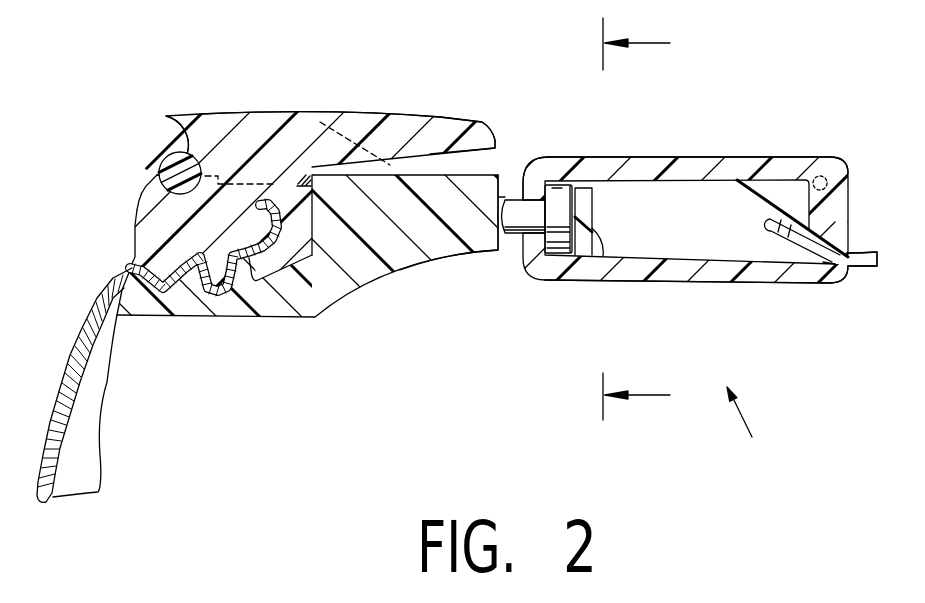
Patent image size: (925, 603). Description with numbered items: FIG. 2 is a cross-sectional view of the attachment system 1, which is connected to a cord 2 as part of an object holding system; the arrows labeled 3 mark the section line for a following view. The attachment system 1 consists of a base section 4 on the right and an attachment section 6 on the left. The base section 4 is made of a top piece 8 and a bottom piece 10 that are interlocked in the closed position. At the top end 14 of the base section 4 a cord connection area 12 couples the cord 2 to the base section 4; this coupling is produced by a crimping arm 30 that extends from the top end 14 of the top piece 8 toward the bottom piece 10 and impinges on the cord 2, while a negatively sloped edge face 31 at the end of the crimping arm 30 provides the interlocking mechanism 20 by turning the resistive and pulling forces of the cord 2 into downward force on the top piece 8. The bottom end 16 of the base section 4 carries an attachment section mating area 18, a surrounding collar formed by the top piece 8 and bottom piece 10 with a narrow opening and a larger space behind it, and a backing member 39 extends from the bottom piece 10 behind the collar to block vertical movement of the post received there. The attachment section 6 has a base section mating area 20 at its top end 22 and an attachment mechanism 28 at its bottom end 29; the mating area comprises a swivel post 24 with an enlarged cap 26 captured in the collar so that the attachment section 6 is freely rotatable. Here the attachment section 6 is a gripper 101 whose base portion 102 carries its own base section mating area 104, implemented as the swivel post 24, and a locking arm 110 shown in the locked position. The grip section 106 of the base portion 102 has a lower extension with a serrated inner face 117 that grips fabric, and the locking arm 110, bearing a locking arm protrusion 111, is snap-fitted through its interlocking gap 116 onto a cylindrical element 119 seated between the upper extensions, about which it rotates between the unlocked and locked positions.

The attachment system 1 is at (747, 427).
The cord 2 is at (867, 270).
The section line 3 is at (650, 219).
The base section 4 is at (783, 156).
The attachment section 6 is at (282, 112).
The top piece 8 is at (565, 157).
The bottom piece 10 is at (730, 282).
The cord connection area 12 is at (826, 284).
The top end 14 is at (846, 156).
The bottom end 16 is at (527, 186).
The attachment section mating area 18 is at (572, 256).
The interlocking mechanism 20 is at (506, 195).
The top end 22 is at (453, 118).
The swivel post 24 is at (505, 240).
The enlarged cap 26 is at (550, 254).
The attachment mechanism 28 is at (170, 115).
The bottom end 29 is at (137, 133).
The crimping arm 30 is at (848, 172).
The negatively sloped edge face 31 is at (800, 233).
The backing member 39 is at (601, 258).
The gripper 101 is at (290, 318).
The base portion 102 is at (338, 300).
The base section mating area 104 is at (435, 262).
The grip section 106 is at (168, 320).
The locking arm 110 is at (368, 113).
The locking arm protrusion 111 is at (135, 227).
The interlocking gap 116 is at (152, 178).
The serrated inner face 117 is at (230, 305).
The cylindrical element 119 is at (158, 176).